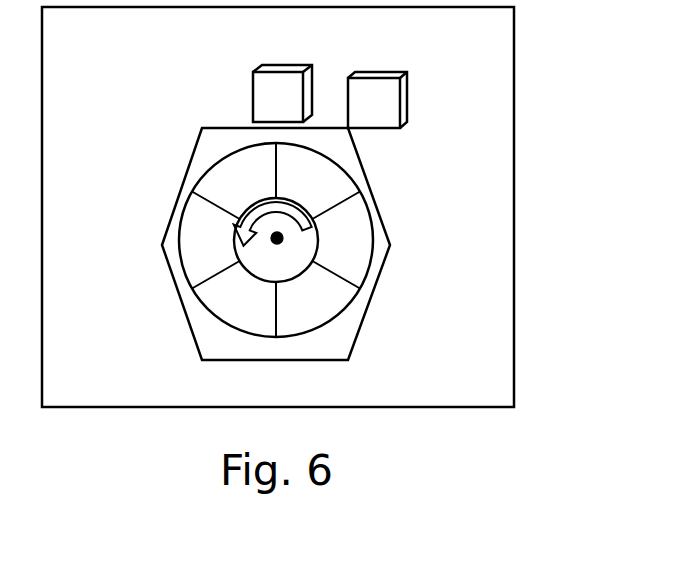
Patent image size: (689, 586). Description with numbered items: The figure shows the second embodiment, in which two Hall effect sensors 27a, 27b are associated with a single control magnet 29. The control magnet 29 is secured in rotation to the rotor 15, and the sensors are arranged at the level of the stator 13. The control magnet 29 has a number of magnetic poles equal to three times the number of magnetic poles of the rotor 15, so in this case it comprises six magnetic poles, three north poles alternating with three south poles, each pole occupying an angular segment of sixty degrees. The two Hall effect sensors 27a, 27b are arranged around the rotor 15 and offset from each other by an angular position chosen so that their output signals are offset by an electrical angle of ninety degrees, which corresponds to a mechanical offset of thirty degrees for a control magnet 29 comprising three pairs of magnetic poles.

The stator 13 is at (498, 156).
The rotor 15 is at (283, 238).
The Hall effect sensor 27a is at (277, 100).
The Hall effect sensor 27b is at (373, 100).
The control magnet 29 is at (203, 218).